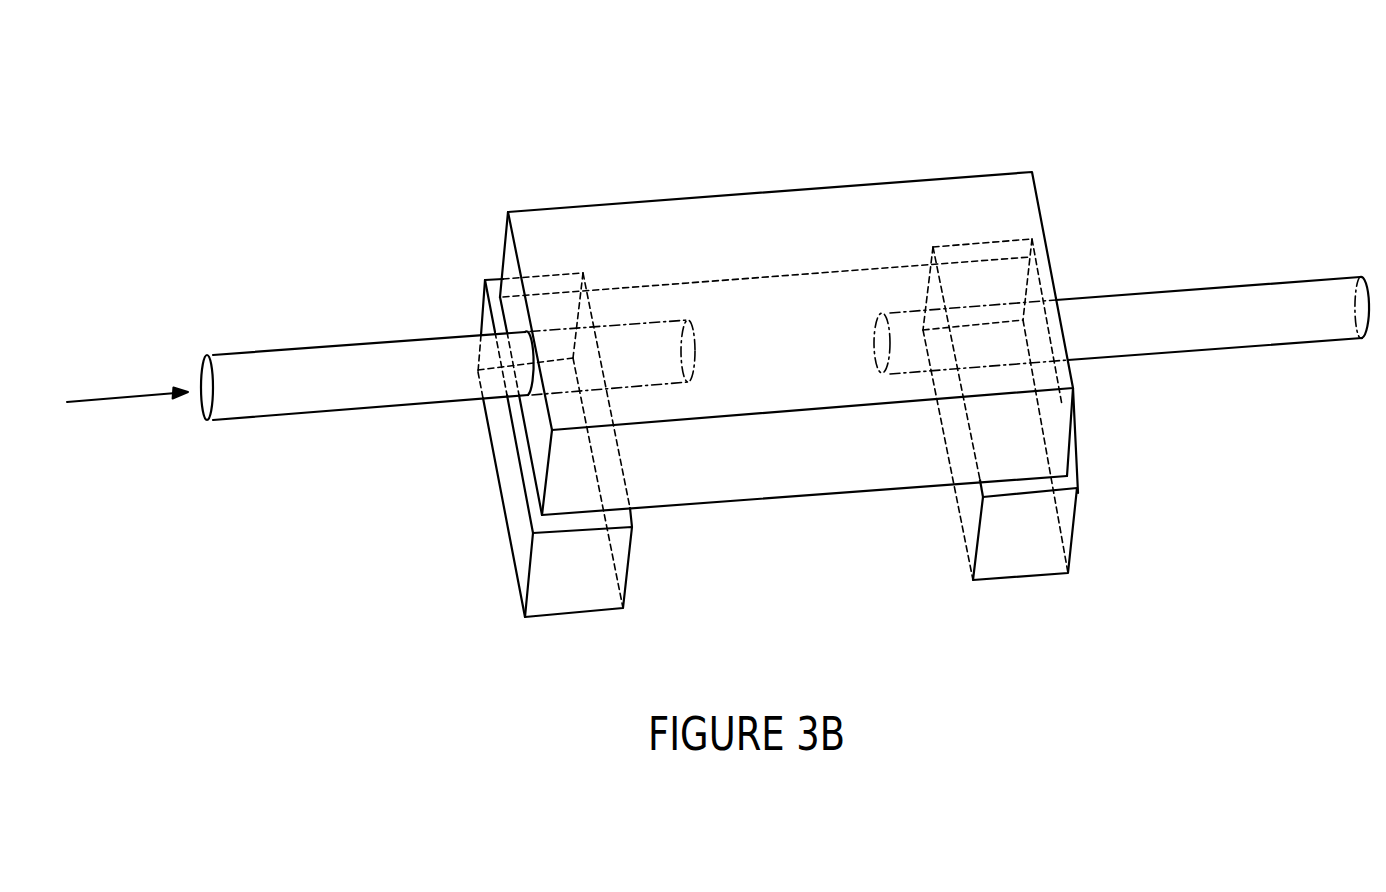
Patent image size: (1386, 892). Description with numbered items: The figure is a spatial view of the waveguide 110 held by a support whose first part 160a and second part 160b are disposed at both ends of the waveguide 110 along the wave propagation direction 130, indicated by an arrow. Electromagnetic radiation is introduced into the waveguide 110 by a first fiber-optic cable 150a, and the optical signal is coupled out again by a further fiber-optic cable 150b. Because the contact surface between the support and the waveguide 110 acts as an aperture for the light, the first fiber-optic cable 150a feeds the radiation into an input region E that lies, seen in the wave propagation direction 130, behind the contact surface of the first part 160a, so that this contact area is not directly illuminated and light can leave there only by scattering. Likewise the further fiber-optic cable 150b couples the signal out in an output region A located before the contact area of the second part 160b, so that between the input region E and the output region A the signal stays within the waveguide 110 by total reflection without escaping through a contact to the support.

The waveguide 110 is at (818, 208).
The wave propagation direction 130 is at (127, 381).
The first fiber-optic cable 150a is at (368, 376).
The further fiber-optic cable 150b is at (1243, 306).
The first part of the support 160a is at (555, 585).
The second part of the support 160b is at (1050, 553).
The input region E is at (695, 362).
The output region A is at (880, 358).